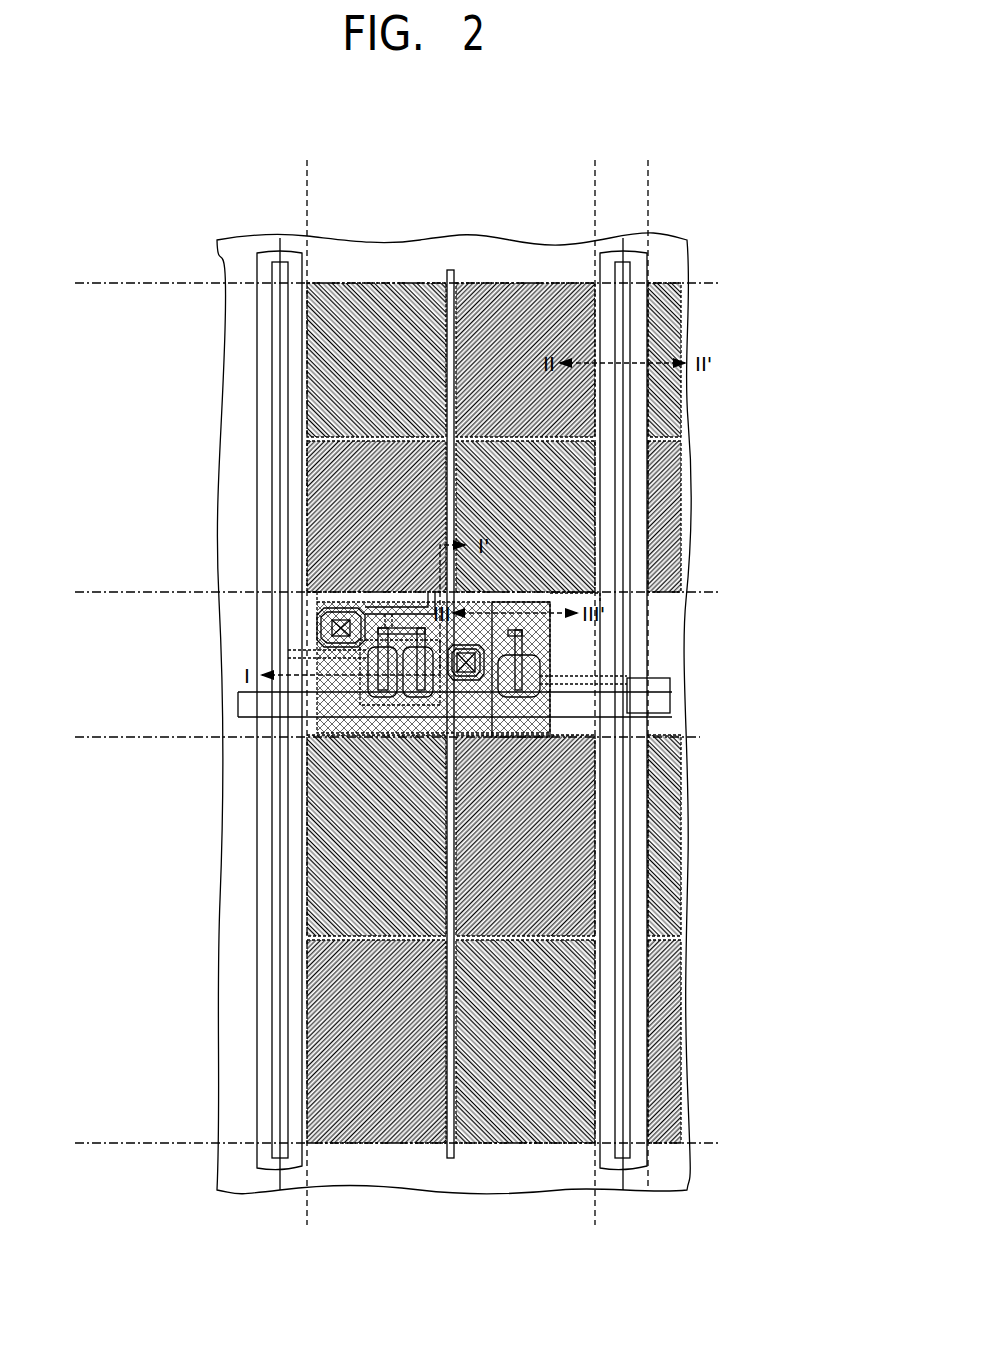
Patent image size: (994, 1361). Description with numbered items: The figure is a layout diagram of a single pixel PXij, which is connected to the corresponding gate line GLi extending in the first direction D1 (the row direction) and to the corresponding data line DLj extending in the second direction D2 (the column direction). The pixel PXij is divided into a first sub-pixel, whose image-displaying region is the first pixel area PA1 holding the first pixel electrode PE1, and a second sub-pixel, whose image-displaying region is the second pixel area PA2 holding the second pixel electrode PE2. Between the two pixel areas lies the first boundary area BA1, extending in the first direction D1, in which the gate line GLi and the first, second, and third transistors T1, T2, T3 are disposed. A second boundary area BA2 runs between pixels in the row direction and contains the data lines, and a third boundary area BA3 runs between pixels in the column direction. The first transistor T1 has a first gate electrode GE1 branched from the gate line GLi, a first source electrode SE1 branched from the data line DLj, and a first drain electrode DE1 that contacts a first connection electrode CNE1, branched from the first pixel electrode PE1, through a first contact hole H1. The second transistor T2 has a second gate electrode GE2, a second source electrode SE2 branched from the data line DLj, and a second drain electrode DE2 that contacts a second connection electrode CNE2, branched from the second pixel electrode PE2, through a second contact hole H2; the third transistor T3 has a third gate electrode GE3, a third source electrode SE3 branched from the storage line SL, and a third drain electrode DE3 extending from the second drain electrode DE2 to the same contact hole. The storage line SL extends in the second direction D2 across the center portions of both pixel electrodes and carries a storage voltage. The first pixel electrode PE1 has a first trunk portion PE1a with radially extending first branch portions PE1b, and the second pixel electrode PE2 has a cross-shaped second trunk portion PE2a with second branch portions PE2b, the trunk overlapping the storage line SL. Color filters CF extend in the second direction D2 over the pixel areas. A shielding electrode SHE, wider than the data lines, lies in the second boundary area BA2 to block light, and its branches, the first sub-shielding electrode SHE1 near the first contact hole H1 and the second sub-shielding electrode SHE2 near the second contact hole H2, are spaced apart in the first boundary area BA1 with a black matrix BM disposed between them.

The pixel PXij is at (232, 195).
The first pixel area PA1 is at (593, 168).
The second pixel area PA2 is at (85, 739).
The first boundary area BA1 is at (85, 594).
The second boundary area BA2 is at (646, 168).
The third boundary area BA3 is at (712, 240).
The storage line SL is at (450, 258).
The color filter CF is at (530, 240).
The data line DLj is at (268, 422).
The shielding electrode SHE is at (268, 460).
The first sub-shielding electrode SHE1 is at (317, 606).
The second sub-shielding electrode SHE2 is at (560, 605).
The first pixel electrode PE1 is at (578, 437).
The first trunk portion PE1a is at (585, 415).
The first branch portions PE1b is at (585, 465).
The second pixel electrode PE2 is at (578, 939).
The second trunk portion PE2a is at (585, 918).
The second branch portions PE2b is at (585, 968).
The first connection electrode CNE1 is at (325, 606).
The second connection electrode CNE2 is at (486, 680).
The first contact hole H1 is at (338, 618).
The second contact hole H2 is at (478, 650).
The first transistor T1 is at (268, 664).
The second transistor T2 is at (271, 729).
The third transistor T3 is at (655, 669).
The first gate electrode GE1 is at (362, 648).
The first source electrode SE1 is at (375, 656).
The first drain electrode DE1 is at (383, 642).
The second gate electrode GE2 is at (445, 705).
The second source electrode SE2 is at (426, 692).
The second drain electrode DE2 is at (420, 645).
The third gate electrode GE3 is at (550, 690).
The third source electrode SE3 is at (542, 672).
The third drain electrode DE3 is at (522, 636).
The gate line GLi is at (250, 700).
The black matrix BM is at (560, 735).
The first direction D1 is at (740, 1218).
The second direction D2 is at (740, 1218).